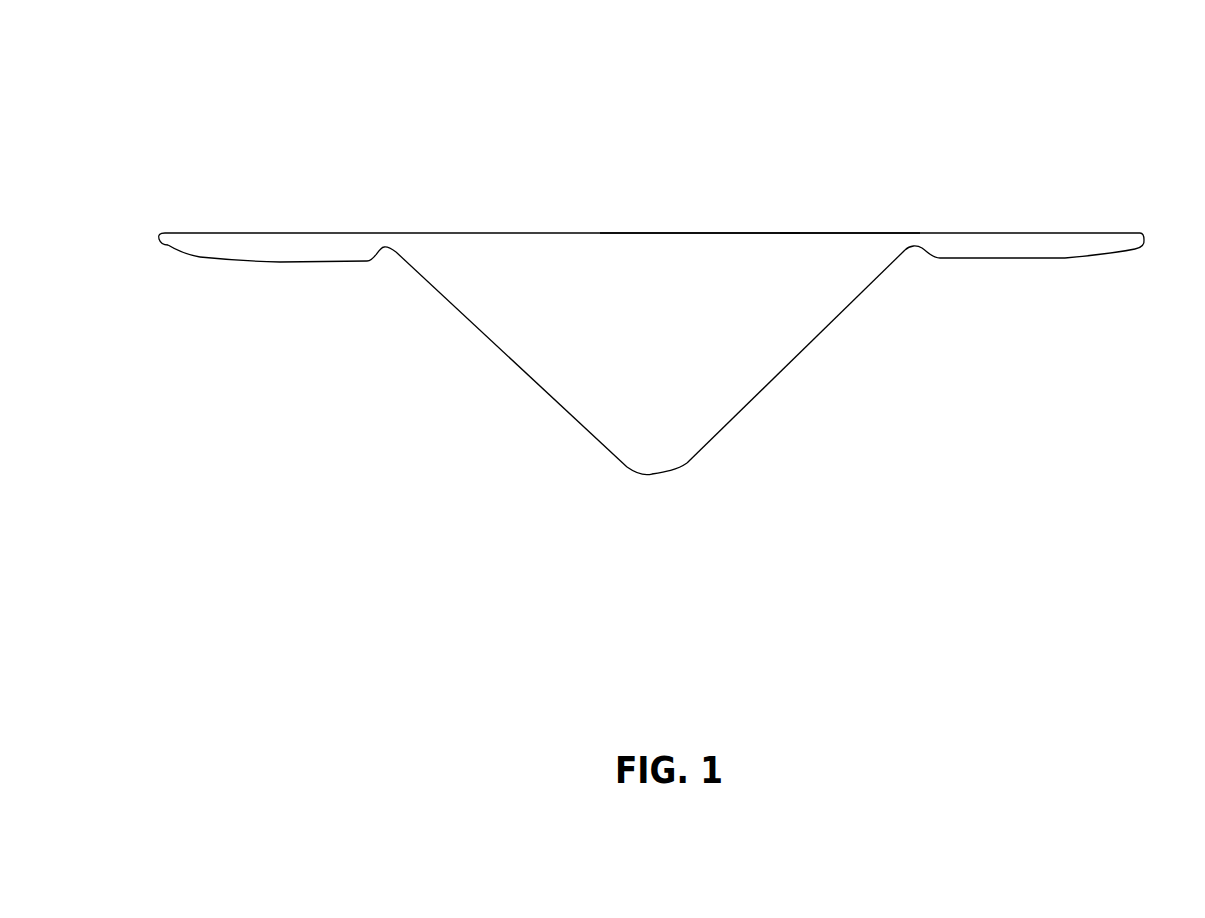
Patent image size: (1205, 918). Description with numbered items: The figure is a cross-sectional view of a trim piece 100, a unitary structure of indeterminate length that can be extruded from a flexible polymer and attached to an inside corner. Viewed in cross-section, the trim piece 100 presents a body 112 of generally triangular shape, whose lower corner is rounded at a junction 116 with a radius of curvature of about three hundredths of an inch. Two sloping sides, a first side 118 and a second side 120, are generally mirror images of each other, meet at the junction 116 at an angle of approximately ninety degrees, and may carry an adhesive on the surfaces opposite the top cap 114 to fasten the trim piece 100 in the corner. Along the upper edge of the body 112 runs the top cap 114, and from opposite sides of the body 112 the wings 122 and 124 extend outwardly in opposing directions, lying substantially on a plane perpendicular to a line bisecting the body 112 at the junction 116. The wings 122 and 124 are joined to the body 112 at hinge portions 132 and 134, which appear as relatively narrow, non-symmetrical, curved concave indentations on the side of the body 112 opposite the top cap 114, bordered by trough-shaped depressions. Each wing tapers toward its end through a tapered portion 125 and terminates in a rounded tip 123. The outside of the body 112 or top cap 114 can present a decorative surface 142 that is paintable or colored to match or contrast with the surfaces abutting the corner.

The trim piece 100 is at (438, 82).
The body 112 is at (652, 204).
The top cap 114 is at (700, 191).
The decorative surface 142 is at (850, 190).
The rounded tip 123 is at (158, 237).
The tapered portion 125 is at (641, 291).
The wing 124 is at (283, 301).
The hinge portion 134 is at (366, 297).
The first side 118 is at (511, 359).
The junction 116 is at (646, 513).
The second side 120 is at (796, 356).
The hinge portion 132 is at (906, 297).
The wing 122 is at (1002, 305).